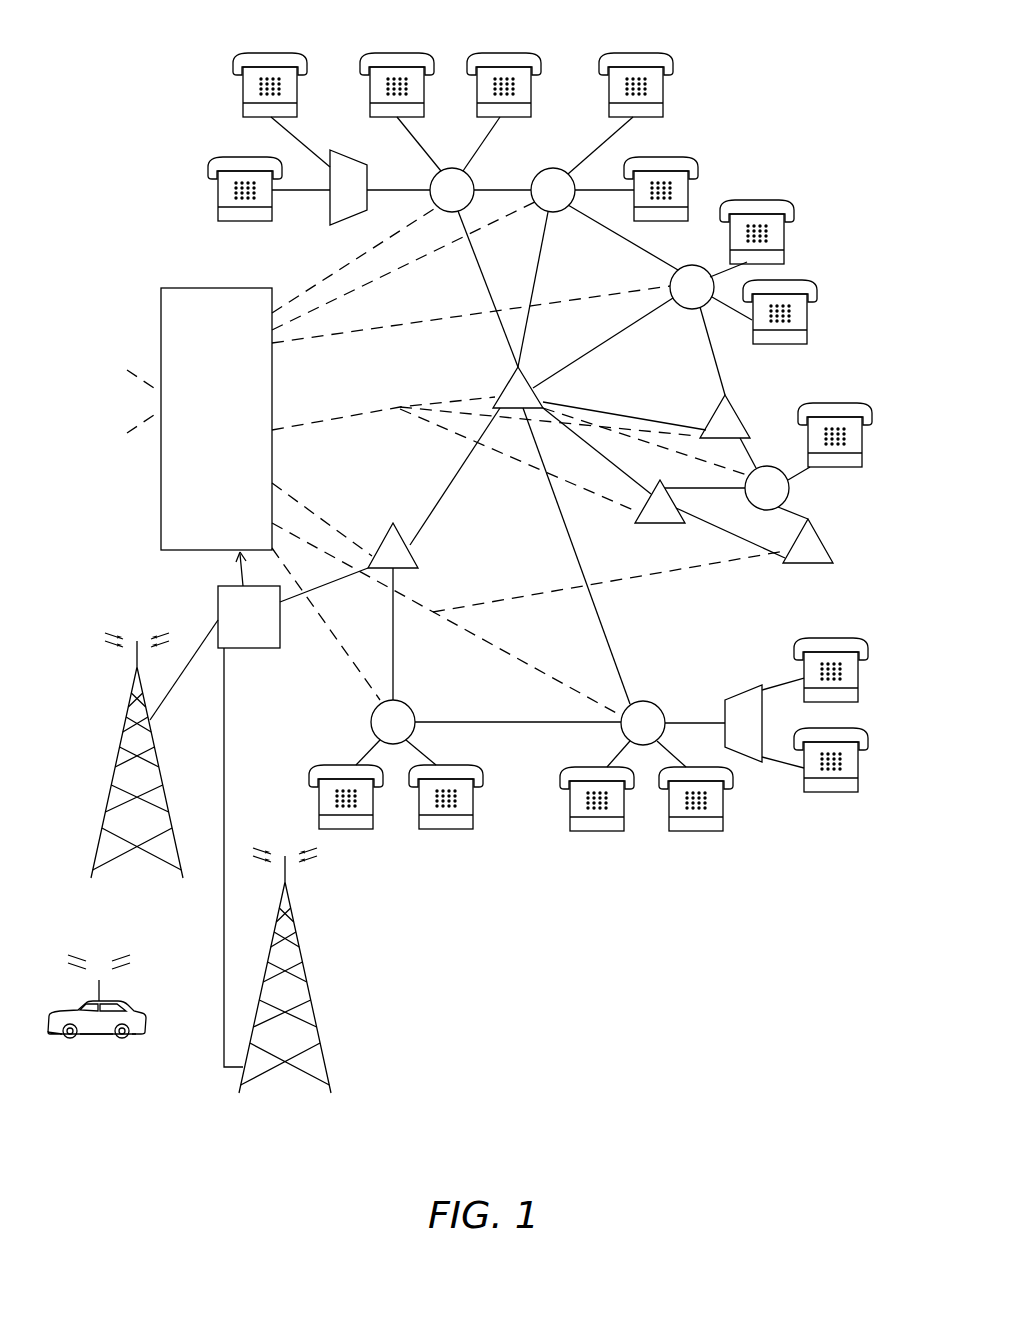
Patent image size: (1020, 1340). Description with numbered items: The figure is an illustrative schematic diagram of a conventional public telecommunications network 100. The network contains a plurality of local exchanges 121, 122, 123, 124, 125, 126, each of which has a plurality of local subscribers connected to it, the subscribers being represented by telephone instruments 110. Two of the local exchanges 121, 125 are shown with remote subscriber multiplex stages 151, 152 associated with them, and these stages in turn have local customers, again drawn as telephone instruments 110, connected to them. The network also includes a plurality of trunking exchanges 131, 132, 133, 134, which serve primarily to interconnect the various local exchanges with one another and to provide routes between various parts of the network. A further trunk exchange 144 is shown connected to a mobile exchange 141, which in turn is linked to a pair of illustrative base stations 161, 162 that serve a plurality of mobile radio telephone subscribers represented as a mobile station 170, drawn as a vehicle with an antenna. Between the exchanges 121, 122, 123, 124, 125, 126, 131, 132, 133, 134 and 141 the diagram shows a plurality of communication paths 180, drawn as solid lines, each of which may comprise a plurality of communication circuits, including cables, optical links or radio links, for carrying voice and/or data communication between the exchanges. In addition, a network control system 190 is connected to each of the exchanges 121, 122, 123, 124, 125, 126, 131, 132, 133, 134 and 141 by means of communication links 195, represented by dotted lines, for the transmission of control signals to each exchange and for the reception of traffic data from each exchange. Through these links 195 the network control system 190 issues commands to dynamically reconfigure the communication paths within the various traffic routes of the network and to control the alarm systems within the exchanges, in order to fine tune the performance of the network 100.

The public telecommunications network 100 is at (768, 941).
The telephone instruments 110 is at (277, 52).
The local exchange 121 is at (478, 176).
The local exchange 122 is at (556, 162).
The local exchange 123 is at (680, 306).
The local exchange 124 is at (792, 492).
The local exchange 125 is at (621, 733).
The local exchange 126 is at (418, 734).
The trunking exchange 131 is at (529, 382).
The trunking exchange 132 is at (742, 424).
The trunking exchange 133 is at (684, 500).
The trunking exchange 134 is at (826, 565).
The mobile exchange 141 is at (282, 650).
The trunk exchange 144 is at (415, 556).
The remote subscriber multiplex stage 151 is at (331, 221).
The remote subscriber multiplex stage 152 is at (736, 700).
The base station 161 is at (106, 796).
The base station 162 is at (314, 1010).
The mobile radio telephone subscribers 170 is at (95, 1038).
The communication paths 180 is at (410, 188).
The network control system 190 is at (231, 477).
The communication links 195 is at (306, 272).